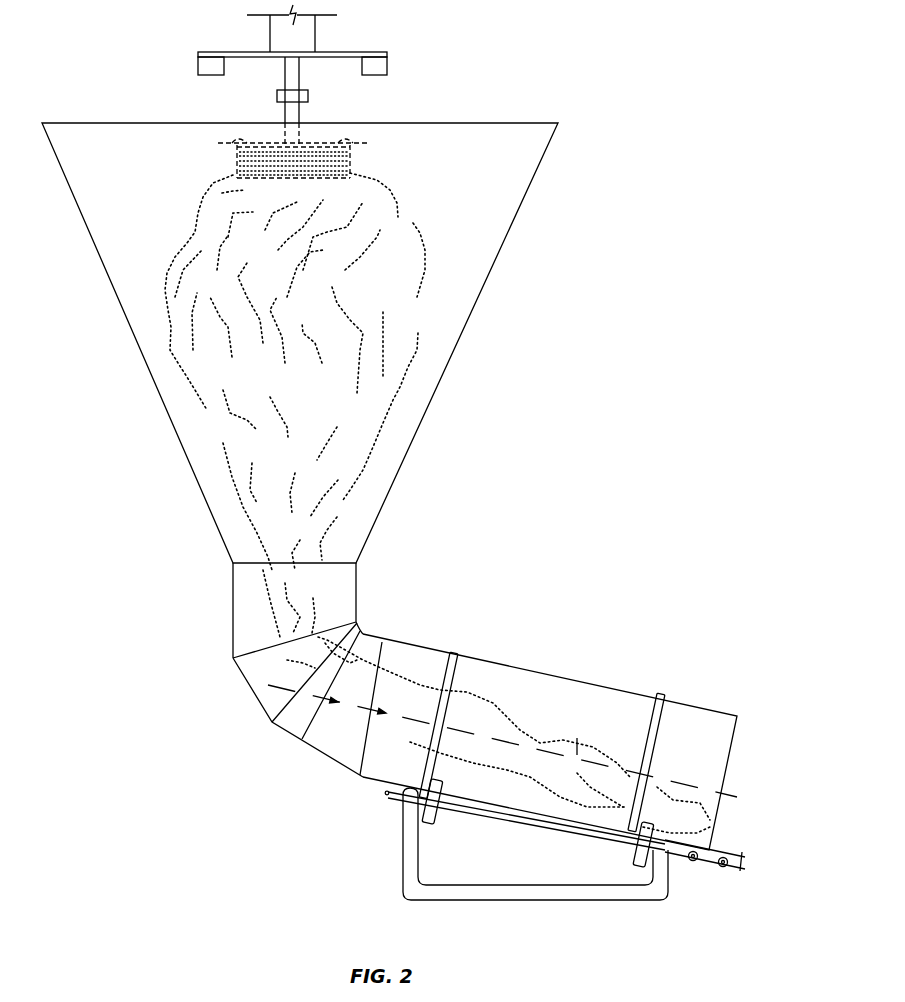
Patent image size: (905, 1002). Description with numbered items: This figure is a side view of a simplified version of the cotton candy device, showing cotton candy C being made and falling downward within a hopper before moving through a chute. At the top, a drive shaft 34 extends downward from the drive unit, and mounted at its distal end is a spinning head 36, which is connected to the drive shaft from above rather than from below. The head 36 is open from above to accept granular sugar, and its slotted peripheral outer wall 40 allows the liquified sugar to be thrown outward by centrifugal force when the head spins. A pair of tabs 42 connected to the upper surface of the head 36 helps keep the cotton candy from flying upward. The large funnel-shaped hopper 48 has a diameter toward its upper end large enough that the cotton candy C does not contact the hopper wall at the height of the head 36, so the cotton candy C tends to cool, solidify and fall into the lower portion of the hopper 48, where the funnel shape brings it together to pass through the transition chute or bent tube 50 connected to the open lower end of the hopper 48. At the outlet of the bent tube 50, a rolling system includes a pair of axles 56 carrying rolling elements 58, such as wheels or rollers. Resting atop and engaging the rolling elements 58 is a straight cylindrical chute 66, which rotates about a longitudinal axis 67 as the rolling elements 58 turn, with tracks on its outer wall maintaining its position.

The drive shaft 34 is at (291, 105).
The spinning head 36 is at (310, 146).
The tabs 42 is at (352, 141).
The slotted peripheral outer wall 40 is at (353, 168).
The hopper 48 is at (482, 292).
The cotton candy C is at (398, 357).
The transition chute or bent tube 50 is at (358, 604).
The straight cylindrical chute 66 is at (543, 676).
The longitudinal axis 67 is at (578, 752).
The rolling elements 58 is at (431, 822).
The axles 56 is at (387, 793).